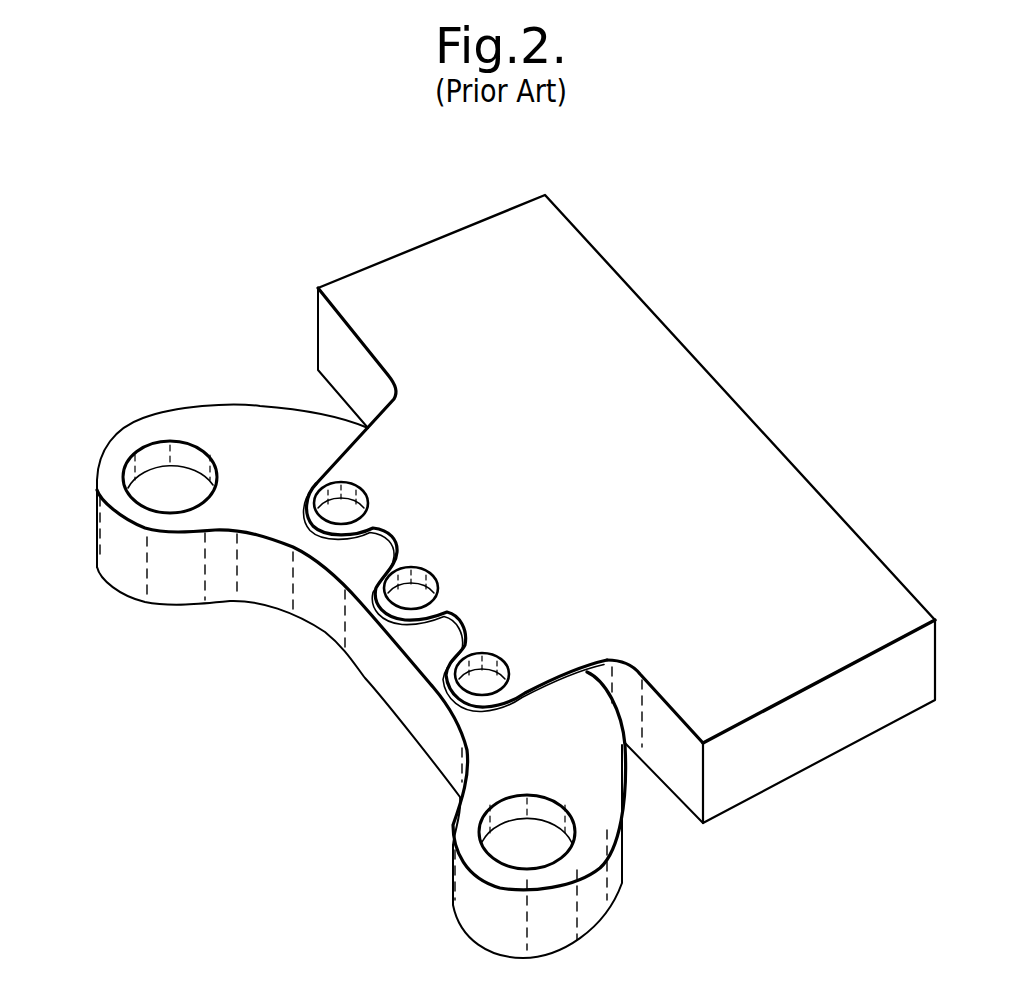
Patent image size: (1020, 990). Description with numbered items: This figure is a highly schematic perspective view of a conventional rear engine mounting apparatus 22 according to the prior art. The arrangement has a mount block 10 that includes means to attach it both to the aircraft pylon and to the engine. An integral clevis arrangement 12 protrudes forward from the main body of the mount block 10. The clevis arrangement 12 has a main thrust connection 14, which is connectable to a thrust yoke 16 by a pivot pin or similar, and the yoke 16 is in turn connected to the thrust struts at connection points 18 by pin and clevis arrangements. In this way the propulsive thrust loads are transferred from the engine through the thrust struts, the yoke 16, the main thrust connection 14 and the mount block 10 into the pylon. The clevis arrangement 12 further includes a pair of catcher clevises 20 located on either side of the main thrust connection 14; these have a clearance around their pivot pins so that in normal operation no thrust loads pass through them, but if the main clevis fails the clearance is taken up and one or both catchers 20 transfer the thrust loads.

The mount block 10 is at (732, 448).
The clevis arrangement 12 is at (517, 638).
The main thrust connection 14 is at (382, 602).
The thrust yoke 16 is at (172, 585).
The connection points 18 is at (163, 487).
The catcher clevises 20 is at (310, 493).
The rear engine mounting apparatus 22 is at (217, 295).